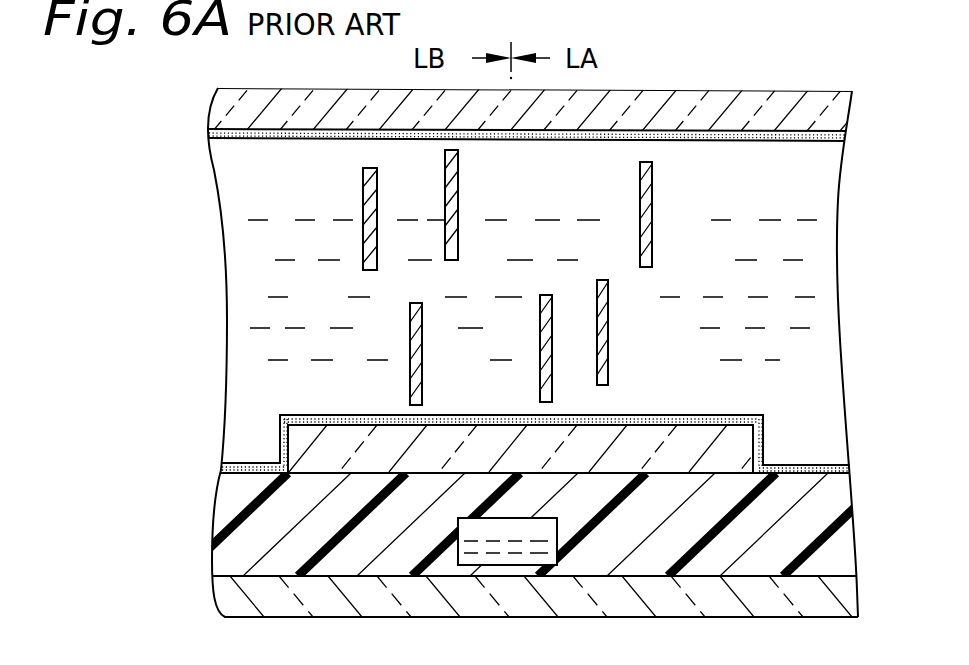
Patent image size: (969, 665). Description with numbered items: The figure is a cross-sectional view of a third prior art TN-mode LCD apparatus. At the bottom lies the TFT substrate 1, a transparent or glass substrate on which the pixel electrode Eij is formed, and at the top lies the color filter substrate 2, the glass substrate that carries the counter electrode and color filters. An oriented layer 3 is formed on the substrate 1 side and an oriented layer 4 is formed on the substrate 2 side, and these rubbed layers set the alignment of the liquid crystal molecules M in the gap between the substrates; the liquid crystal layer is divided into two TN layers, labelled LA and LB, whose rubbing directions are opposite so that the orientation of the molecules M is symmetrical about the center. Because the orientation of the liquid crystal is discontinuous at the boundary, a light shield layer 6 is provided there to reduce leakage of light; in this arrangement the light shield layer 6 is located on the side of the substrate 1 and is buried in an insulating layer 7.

The color filter substrate 2 is at (846, 118).
The oriented layer 4 is at (845, 138).
The liquid crystal molecules M is at (653, 237).
The pixel electrode Eij is at (743, 447).
The oriented layer 3 is at (857, 470).
The insulating layer 7 is at (845, 552).
The light shield layer 6 is at (537, 557).
The TFT substrate 1 is at (847, 596).